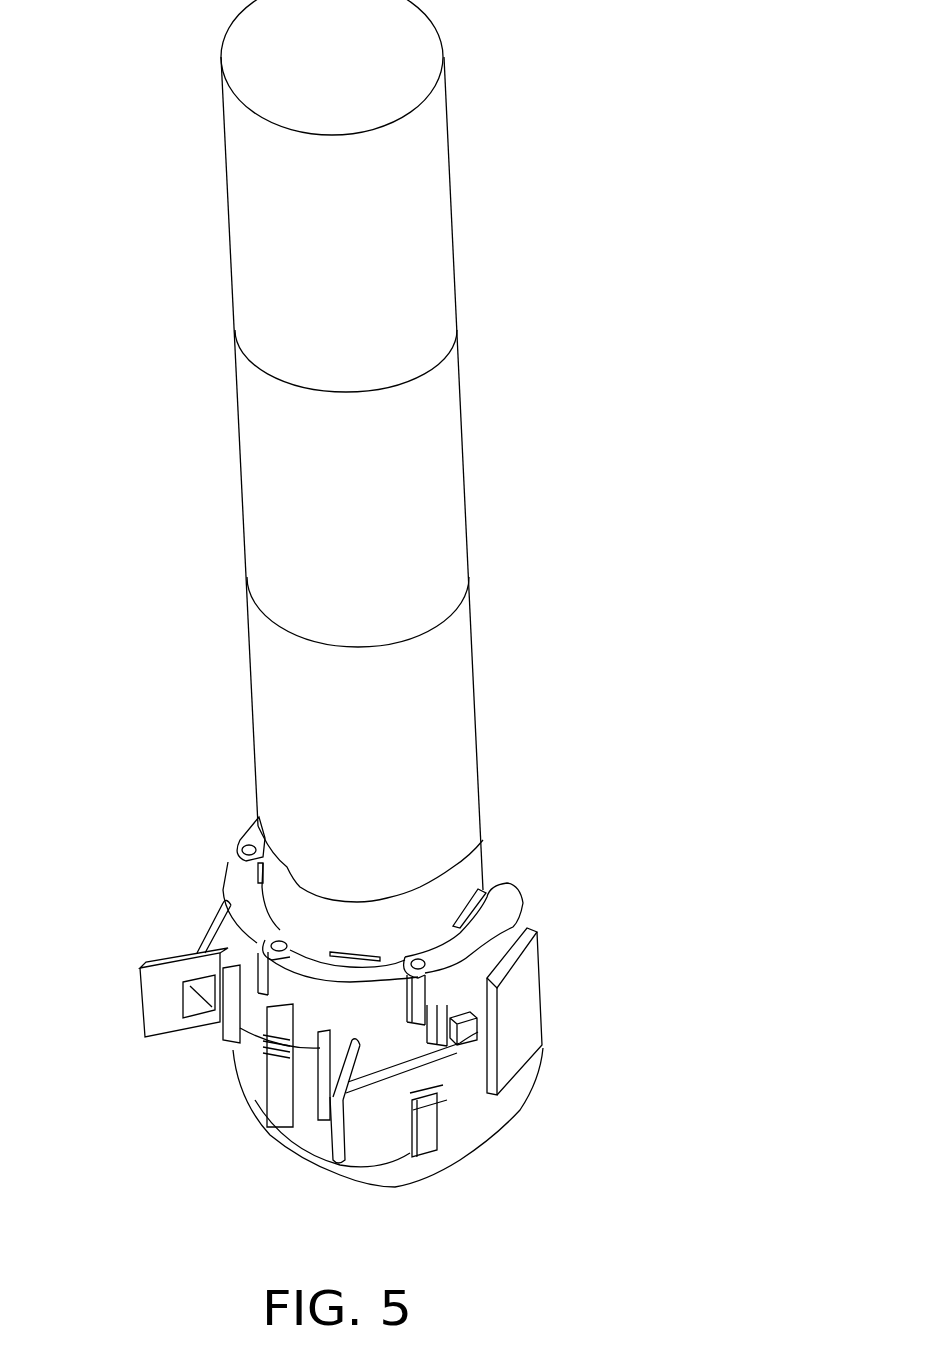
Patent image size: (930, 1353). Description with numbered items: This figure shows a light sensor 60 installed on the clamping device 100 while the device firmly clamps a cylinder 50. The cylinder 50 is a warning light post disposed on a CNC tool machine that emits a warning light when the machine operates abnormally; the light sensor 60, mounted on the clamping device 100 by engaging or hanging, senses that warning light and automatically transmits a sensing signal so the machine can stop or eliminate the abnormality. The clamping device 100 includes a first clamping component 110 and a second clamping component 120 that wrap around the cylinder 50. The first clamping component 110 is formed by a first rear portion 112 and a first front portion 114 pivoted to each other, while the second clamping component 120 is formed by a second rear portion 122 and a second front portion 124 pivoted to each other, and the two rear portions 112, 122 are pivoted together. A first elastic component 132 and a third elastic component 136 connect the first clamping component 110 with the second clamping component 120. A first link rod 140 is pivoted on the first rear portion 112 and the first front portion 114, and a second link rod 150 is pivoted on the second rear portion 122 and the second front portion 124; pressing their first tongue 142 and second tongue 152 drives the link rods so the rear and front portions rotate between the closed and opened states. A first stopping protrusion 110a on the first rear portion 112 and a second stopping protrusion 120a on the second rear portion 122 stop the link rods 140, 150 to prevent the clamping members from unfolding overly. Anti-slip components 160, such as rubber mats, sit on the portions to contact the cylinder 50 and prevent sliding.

The cylinder 50 is at (456, 724).
The light sensor 60 is at (530, 1035).
The clamping device 100 is at (557, 1090).
The first clamping component 110 is at (444, 1051).
The first stopping protrusion 110a is at (318, 1085).
The first rear portion 112 is at (382, 997).
The first front portion 114 is at (515, 928).
The second clamping component 120 is at (238, 952).
The second stopping protrusion 120a is at (230, 1030).
The second rear portion 122 is at (233, 878).
The second front portion 124 is at (247, 833).
The first elastic component 132 is at (415, 1085).
The third elastic component 136 is at (270, 1050).
The first link rod 140 is at (437, 1087).
The first tongue 142 is at (325, 1120).
The second link rod 150 is at (141, 1016).
The second tongue 152 is at (160, 1008).
The anti-slip component 160 is at (485, 888).